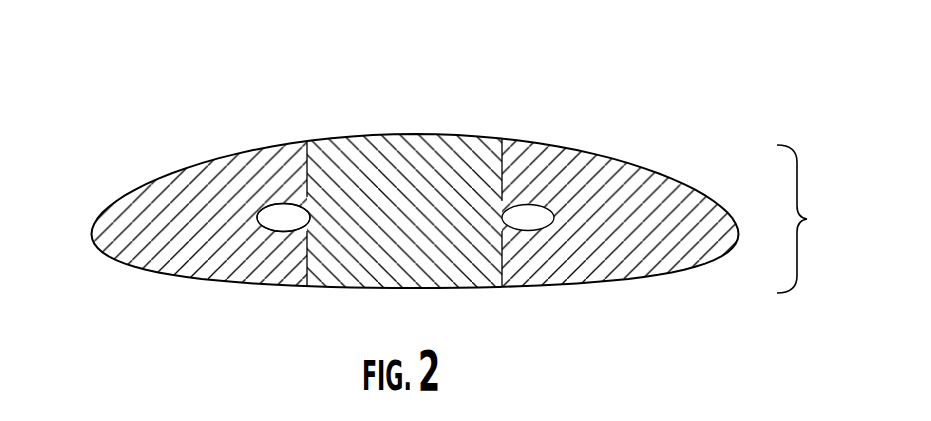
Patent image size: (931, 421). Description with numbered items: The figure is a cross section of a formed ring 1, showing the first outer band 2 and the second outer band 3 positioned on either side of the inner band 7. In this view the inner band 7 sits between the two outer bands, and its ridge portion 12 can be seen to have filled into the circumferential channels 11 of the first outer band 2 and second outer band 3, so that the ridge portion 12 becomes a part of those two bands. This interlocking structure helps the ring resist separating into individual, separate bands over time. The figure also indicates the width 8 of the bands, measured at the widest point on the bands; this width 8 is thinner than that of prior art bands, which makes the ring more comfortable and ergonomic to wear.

The formed ring 1 is at (391, 190).
The first outer band 2 is at (192, 192).
The second outer band 3 is at (672, 208).
The inner band 7 is at (403, 160).
The width 8 is at (801, 219).
The circumferential channel 11 is at (272, 224).
The ridge portion 12 is at (405, 219).